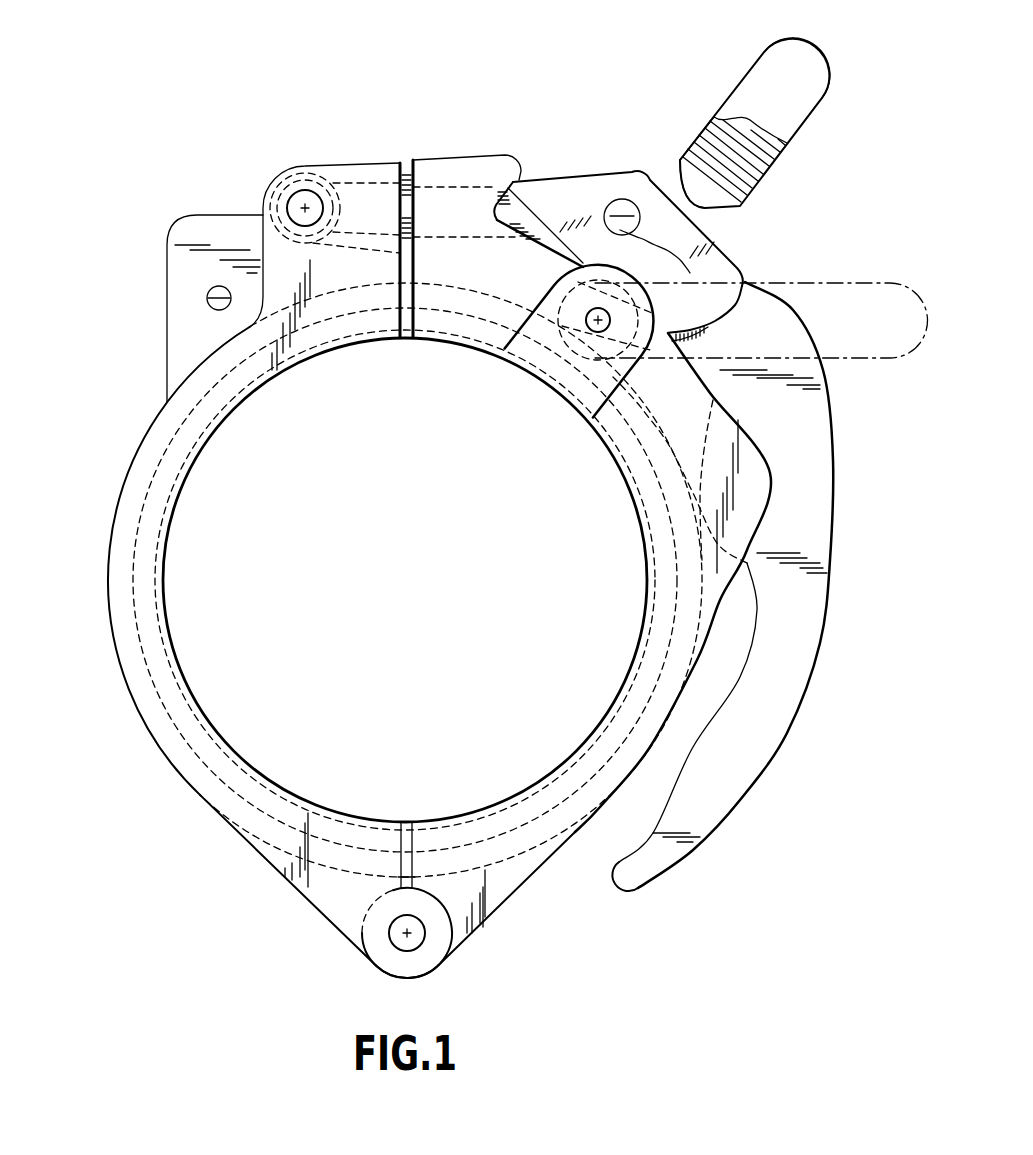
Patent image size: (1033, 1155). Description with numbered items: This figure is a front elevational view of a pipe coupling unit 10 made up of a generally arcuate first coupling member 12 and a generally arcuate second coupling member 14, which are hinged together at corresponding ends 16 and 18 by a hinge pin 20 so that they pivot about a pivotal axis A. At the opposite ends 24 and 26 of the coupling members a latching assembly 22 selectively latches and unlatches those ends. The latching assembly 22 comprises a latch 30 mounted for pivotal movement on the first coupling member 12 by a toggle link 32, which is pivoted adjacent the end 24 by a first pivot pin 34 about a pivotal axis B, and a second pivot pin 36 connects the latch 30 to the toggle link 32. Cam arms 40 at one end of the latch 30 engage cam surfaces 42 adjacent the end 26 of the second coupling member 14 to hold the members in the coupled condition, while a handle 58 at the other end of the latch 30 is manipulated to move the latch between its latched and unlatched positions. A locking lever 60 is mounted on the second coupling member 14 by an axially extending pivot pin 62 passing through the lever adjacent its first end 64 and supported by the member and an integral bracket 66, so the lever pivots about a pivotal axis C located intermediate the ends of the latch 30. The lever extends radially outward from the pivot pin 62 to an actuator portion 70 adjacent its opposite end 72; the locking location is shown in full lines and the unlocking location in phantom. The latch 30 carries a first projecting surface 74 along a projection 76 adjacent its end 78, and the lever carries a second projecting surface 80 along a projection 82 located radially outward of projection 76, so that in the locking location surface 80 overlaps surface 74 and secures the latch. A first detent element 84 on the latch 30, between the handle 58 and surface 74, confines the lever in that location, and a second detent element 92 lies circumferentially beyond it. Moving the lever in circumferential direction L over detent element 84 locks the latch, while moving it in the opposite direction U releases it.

The pipe coupling unit 10 is at (116, 495).
The first coupling member 12 is at (137, 697).
The second coupling member 14 is at (473, 924).
The end of first coupling member 16 is at (409, 970).
The end of second coupling member 18 is at (426, 975).
The hinge pin 20 is at (399, 952).
The pivotal axis A is at (400, 938).
The latching assembly 22 is at (524, 174).
The second end of first coupling member 24 is at (363, 168).
The end of second coupling member 26 is at (462, 160).
The latch 30 is at (830, 478).
The toggle link 32 is at (507, 218).
The first pivot pin 34 is at (305, 190).
The pivotal axis B is at (300, 205).
The second pivot pin 36 is at (607, 212).
The cam arms 40 is at (548, 186).
The cam surfaces 42 is at (538, 237).
The handle 58 is at (738, 800).
The locking lever 60 is at (826, 96).
The pivot pin 62 is at (596, 330).
The pivotal axis C is at (594, 325).
The first end of locking lever 64 is at (560, 361).
The bracket 66 is at (622, 382).
The actuator portion 70 is at (766, 62).
The opposite end of locking lever 72 is at (818, 51).
The first projecting surface 74 is at (682, 200).
The projection 76 is at (738, 290).
The end of latch 78 is at (496, 207).
The second projecting surface 80 is at (700, 207).
The projection 82 is at (768, 172).
The first detent element 84 is at (746, 262).
The second detent element 92 is at (637, 173).
The circumferential direction U is at (733, 67).
The circumferential direction L is at (827, 143).